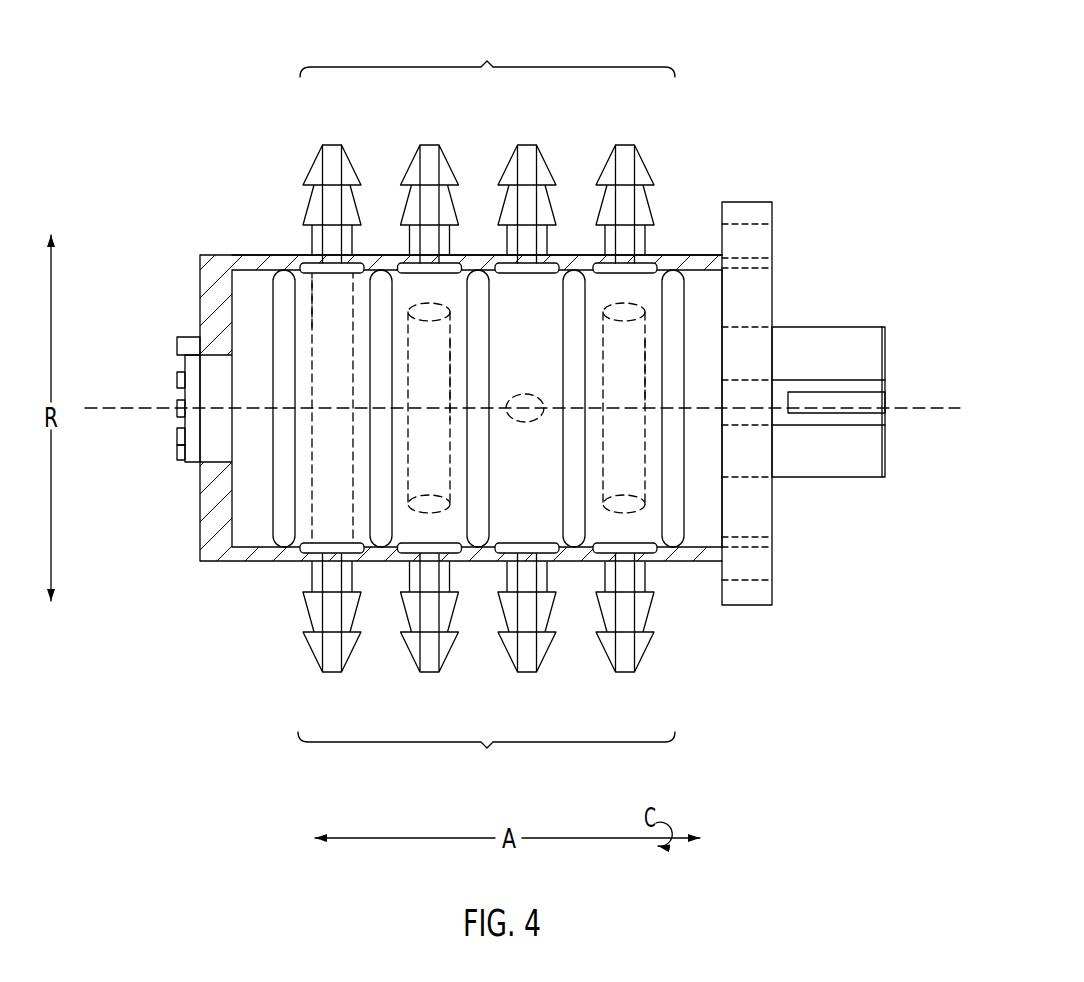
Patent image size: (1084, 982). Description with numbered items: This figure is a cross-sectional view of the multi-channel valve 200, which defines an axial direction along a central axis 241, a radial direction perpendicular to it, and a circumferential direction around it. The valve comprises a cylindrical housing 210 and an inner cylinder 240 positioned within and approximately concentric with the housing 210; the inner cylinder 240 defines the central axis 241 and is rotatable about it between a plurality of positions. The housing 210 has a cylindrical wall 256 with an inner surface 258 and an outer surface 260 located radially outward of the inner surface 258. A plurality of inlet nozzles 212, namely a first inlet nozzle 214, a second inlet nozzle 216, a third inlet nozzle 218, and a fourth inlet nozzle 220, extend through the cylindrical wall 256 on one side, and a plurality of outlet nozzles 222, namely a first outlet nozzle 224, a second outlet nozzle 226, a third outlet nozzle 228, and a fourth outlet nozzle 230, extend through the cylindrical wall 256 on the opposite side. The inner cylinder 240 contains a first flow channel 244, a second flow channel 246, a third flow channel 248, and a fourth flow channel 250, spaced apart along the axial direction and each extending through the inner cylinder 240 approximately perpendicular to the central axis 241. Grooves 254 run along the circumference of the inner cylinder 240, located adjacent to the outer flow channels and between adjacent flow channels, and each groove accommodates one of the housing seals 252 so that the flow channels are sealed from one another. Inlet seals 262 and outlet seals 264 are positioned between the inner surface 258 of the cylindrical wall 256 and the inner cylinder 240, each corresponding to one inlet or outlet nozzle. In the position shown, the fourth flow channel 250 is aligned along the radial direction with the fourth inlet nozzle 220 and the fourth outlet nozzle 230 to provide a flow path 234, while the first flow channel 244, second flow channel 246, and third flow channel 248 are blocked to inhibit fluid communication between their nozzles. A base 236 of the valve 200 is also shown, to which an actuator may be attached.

The multi-channel valve 200 is at (750, 52).
The cylindrical housing 210 is at (207, 283).
The plurality of inlet nozzles 212 is at (487, 53).
The first inlet nozzle 214 is at (644, 176).
The second inlet nozzle 216 is at (542, 176).
The third inlet nozzle 218 is at (446, 176).
The fourth inlet nozzle 220 is at (349, 176).
The plurality of outlet nozzles 222 is at (486, 758).
The first outlet nozzle 224 is at (643, 643).
The second outlet nozzle 226 is at (541, 643).
The third outlet nozzle 228 is at (445, 643).
The fourth outlet nozzle 230 is at (348, 643).
The flow path 234 is at (323, 487).
The base 236 is at (763, 213).
The inner cylinder 240 is at (240, 521).
The central axis 241 is at (910, 404).
The first flow channel 244 is at (640, 360).
The second flow channel 246 is at (526, 422).
The third flow channel 248 is at (451, 380).
The fourth flow channel 250 is at (310, 293).
The housing seals 252 is at (280, 327).
The grooves 254 is at (480, 304).
The cylindrical wall 256 is at (220, 266).
The inner surface 258 is at (706, 273).
The outer surface 260 is at (264, 252).
The inlet seals 262 is at (353, 268).
The outlet seals 264 is at (356, 552).